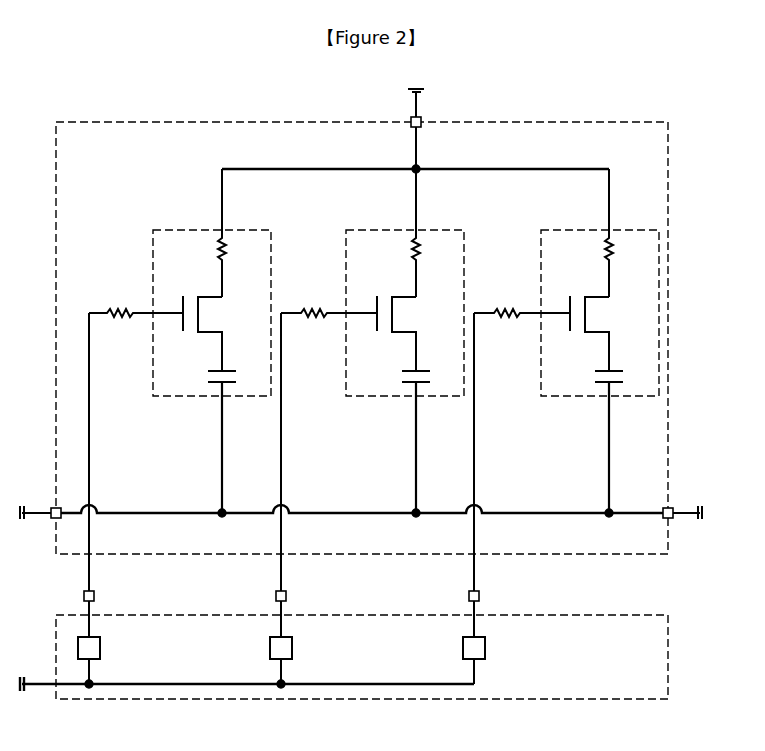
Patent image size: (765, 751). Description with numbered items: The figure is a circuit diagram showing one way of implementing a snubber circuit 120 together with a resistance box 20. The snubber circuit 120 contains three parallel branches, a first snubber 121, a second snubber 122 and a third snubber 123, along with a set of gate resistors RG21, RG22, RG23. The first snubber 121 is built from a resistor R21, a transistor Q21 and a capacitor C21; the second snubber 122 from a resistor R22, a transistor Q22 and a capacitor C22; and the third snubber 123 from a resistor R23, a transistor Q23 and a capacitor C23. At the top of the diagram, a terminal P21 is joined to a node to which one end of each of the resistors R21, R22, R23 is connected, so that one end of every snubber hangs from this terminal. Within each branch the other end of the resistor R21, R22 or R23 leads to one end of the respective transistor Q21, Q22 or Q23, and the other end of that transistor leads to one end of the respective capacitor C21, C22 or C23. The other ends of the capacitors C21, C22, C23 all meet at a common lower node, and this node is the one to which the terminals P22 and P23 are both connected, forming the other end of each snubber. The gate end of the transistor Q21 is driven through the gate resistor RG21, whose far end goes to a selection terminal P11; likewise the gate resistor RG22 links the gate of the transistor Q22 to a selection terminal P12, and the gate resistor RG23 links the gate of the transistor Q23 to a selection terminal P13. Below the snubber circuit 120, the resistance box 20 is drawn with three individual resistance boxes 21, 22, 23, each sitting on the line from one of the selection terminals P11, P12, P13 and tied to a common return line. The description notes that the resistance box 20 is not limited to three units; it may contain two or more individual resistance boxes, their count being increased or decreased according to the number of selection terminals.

The snubber circuit 120 is at (668, 138).
The first snubber 121 is at (171, 230).
The second snubber 122 is at (459, 230).
The third snubber 123 is at (641, 230).
The resistance box 20 is at (668, 630).
The individual resistance box 21 is at (100, 648).
The individual resistance box 22 is at (292, 648).
The individual resistance box 23 is at (485, 648).
The terminal P21 is at (431, 129).
The terminal P22 is at (40, 500).
The terminal P23 is at (667, 500).
The selection terminal P11 is at (105, 583).
The selection terminal P12 is at (297, 583).
The selection terminal P13 is at (490, 583).
The resistor R21 is at (238, 233).
The resistor R22 is at (432, 233).
The resistor R23 is at (625, 233).
The transistor Q21 is at (210, 333).
The transistor Q22 is at (404, 333).
The transistor Q23 is at (597, 333).
The capacitor C21 is at (207, 438).
The capacitor C22 is at (400, 438).
The capacitor C23 is at (593, 438).
The gate resistor RG21 is at (136, 299).
The gate resistor RG22 is at (329, 299).
The gate resistor RG23 is at (522, 299).